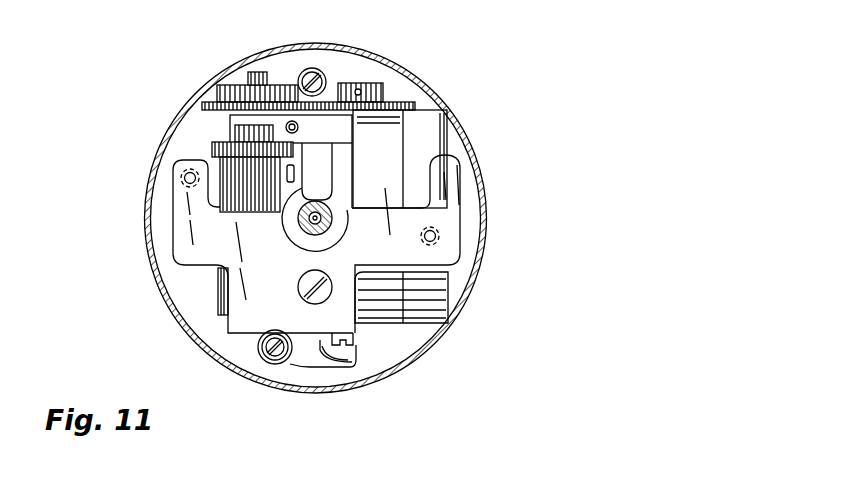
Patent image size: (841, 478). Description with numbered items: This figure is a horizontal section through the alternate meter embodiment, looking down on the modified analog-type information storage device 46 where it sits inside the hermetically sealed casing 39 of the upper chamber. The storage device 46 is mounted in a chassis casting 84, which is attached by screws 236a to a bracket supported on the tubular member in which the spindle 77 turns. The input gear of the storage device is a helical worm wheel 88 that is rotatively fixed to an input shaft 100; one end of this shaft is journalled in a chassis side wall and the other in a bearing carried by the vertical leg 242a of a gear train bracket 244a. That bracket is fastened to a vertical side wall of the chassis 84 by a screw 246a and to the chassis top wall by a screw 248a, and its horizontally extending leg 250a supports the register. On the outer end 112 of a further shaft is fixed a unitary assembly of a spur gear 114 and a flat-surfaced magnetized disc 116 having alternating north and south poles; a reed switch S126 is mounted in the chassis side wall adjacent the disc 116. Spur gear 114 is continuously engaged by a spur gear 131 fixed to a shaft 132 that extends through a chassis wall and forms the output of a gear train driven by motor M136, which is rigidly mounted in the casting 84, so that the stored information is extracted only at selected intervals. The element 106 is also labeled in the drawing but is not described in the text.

The hermetically sealed casing 39 is at (486, 256).
The horizontally extending leg 250a is at (173, 228).
The gear train bracket 244a is at (462, 214).
The shaft 132 is at (356, 128).
The motor M136 is at (446, 297).
The chassis casting 84 is at (276, 84).
The spur gear 114 is at (204, 100).
The magnetized disc 116 is at (232, 84).
The outer end of shaft 112 is at (252, 72).
The spur gear 131 is at (404, 100).
The screws 236a is at (312, 68).
The reed switch S126 is at (298, 129).
The input shaft 100 is at (237, 135).
The worm wheel 88 is at (213, 153).
The information storage device 46 is at (193, 138).
The spindle 77 is at (327, 206).
The screw 248a is at (299, 285).
The screw 246a is at (356, 340).
The vertical leg 242a is at (347, 358).
The strip 106 is at (218, 303).